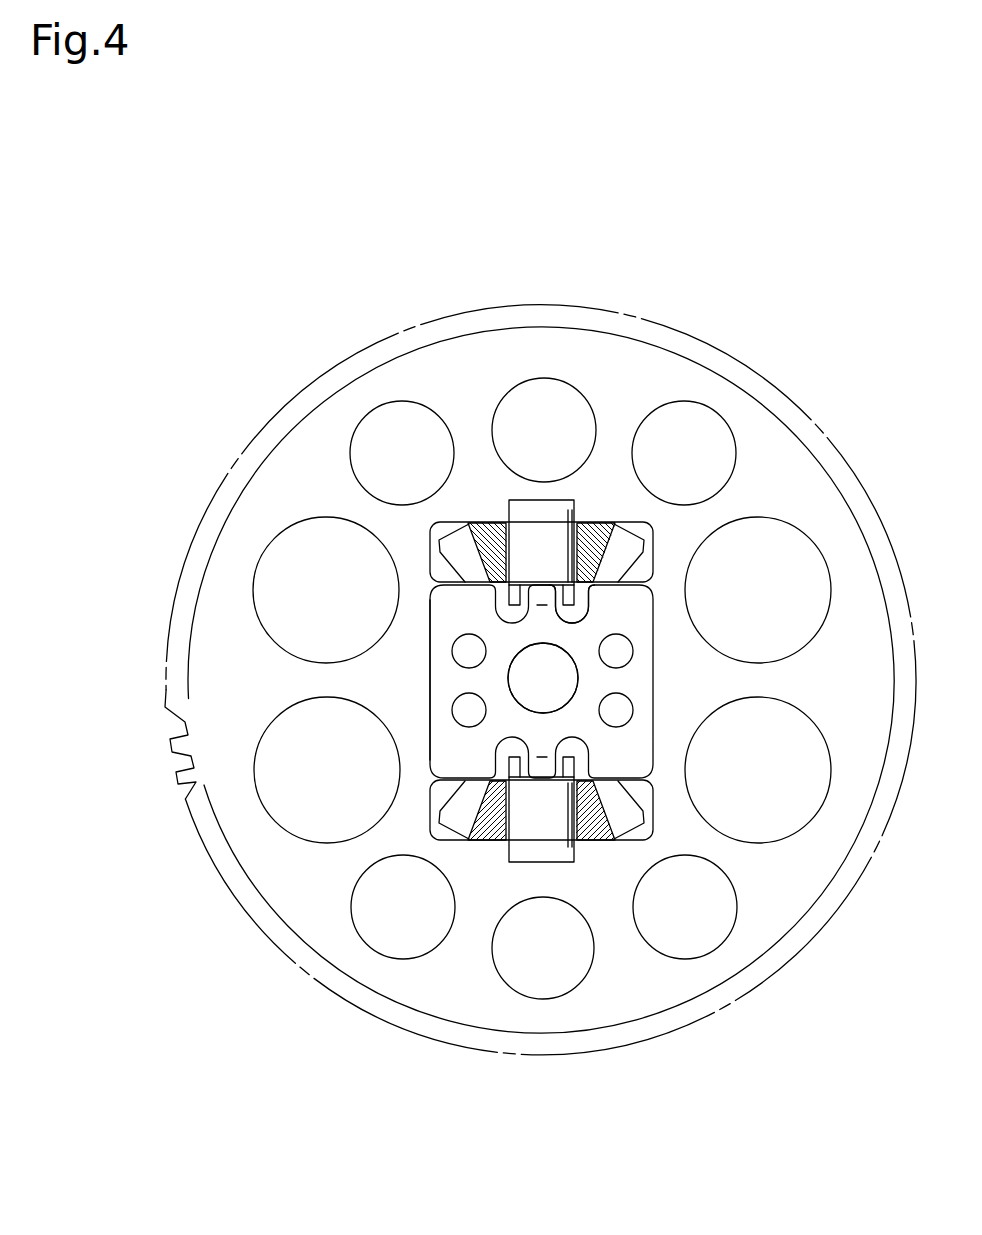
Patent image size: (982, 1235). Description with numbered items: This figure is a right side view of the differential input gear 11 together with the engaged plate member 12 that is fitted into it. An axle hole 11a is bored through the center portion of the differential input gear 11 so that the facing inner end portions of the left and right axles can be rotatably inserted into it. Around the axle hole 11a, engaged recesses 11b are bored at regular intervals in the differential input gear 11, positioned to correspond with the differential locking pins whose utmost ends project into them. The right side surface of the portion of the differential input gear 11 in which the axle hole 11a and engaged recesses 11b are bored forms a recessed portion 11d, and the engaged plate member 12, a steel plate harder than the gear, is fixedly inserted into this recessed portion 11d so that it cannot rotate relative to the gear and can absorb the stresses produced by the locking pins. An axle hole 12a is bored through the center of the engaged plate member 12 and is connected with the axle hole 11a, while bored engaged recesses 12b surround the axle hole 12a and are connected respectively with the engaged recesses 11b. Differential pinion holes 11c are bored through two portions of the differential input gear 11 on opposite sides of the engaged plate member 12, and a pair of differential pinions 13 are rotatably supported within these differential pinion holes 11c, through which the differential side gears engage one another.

The differential input gear 11 is at (775, 443).
The axle hole 11a is at (543, 678).
The engaged recesses 11b is at (572, 604).
The differential pinion holes 11c is at (448, 527).
The recessed portion 11d is at (436, 683).
The engaged plate member 12 is at (438, 737).
The axle hole 12a is at (548, 692).
The engaged recesses 12b is at (583, 610).
The differential pinions 13 is at (640, 560).